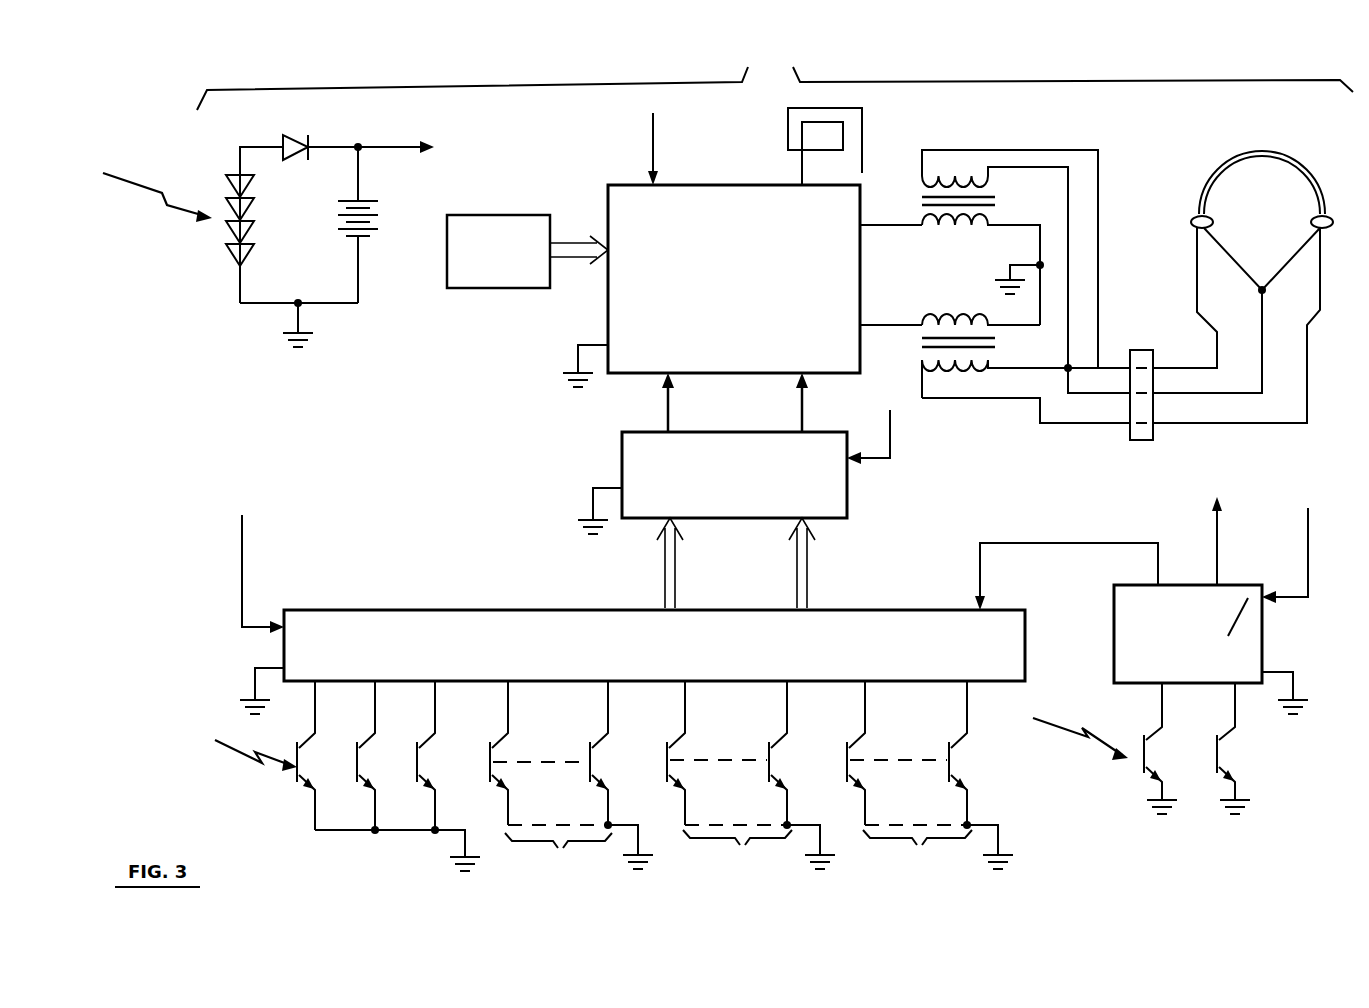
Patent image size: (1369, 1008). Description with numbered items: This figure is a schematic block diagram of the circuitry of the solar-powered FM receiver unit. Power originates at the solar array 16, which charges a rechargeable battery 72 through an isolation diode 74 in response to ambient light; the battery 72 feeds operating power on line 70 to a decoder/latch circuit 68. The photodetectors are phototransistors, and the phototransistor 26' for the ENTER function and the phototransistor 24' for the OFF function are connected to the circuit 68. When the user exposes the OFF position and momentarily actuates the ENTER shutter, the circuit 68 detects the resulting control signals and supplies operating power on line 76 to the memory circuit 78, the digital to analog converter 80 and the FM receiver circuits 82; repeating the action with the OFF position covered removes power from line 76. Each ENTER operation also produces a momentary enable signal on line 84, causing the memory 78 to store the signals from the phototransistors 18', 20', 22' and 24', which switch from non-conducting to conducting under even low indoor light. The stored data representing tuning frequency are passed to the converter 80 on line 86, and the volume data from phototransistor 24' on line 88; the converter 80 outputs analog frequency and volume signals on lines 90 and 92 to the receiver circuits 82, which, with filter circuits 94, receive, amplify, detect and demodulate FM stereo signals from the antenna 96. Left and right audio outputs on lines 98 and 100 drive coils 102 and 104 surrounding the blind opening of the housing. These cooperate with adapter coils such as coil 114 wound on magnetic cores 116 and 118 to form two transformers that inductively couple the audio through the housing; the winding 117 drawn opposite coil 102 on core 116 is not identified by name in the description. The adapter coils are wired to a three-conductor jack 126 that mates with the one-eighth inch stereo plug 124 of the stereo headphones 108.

The solar array 16 is at (228, 228).
The phototransistors 18' is at (347, 776).
The phototransistors 20' is at (571, 778).
The phototransistors 22' is at (751, 779).
The phototransistor 24' is at (1063, 778).
The phototransistor 26' is at (1114, 748).
The decoder/latch circuit 68 is at (1135, 585).
The line 70 is at (390, 147).
The rechargeable battery 72 is at (340, 220).
The isolation diode 74 is at (305, 140).
The line 76 is at (653, 130).
The memory circuit 78 is at (487, 610).
The digital to analog (D/A) converter 80 is at (638, 452).
The FM receiver circuits 82 is at (748, 185).
The line 84 is at (1080, 543).
The line 86 is at (677, 575).
The line 88 is at (797, 545).
The line 90 is at (665, 400).
The line 92 is at (798, 395).
The filter circuits 94 is at (527, 215).
The antenna 96 is at (788, 120).
The line 98 is at (902, 223).
The line 100 is at (905, 323).
The coil 102 is at (975, 228).
The coil 104 is at (983, 318).
The stereo headphones 108 is at (1232, 145).
The coil 114 is at (975, 373).
The magnetic core 116 is at (988, 196).
The left transformer secondary winding 117 is at (973, 182).
The magnetic core 118 is at (928, 348).
The stereo plug 124 is at (1157, 352).
The jack 126 is at (1128, 352).